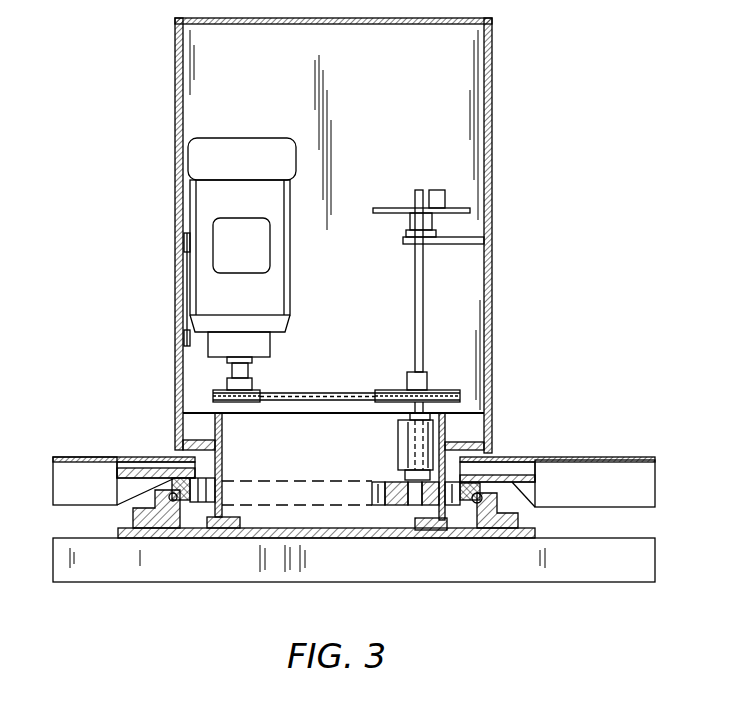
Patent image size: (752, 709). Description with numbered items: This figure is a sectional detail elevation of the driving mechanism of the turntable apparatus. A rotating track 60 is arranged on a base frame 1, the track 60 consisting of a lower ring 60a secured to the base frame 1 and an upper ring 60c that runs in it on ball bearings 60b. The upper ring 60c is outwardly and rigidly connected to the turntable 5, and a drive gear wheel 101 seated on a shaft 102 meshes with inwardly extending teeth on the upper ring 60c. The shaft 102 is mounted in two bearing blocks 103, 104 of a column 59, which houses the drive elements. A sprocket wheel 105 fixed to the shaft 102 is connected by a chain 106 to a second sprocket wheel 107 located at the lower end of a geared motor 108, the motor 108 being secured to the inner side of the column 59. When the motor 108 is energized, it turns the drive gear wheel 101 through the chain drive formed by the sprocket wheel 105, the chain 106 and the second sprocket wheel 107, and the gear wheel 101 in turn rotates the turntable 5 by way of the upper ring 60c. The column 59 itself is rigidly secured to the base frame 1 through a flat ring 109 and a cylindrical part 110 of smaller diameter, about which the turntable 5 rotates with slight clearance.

The base frame 1 is at (223, 568).
The turntable 5 is at (73, 470).
The column 59 is at (492, 133).
The rotating track 60 is at (537, 522).
The lower ring 60a is at (508, 538).
The ball bearings 60b is at (477, 503).
The upper ring 60c is at (485, 478).
The drive gear wheel 101 is at (372, 508).
The shaft 102 is at (417, 293).
The bearing block 103 is at (403, 443).
The bearing block 104 is at (453, 244).
The sprocket wheel 105 is at (388, 390).
The chain 106 is at (333, 390).
The second sprocket wheel 107 is at (213, 392).
The geared motor 108 is at (243, 150).
The flat ring 109 is at (197, 440).
The cylindrical part 110 is at (222, 472).